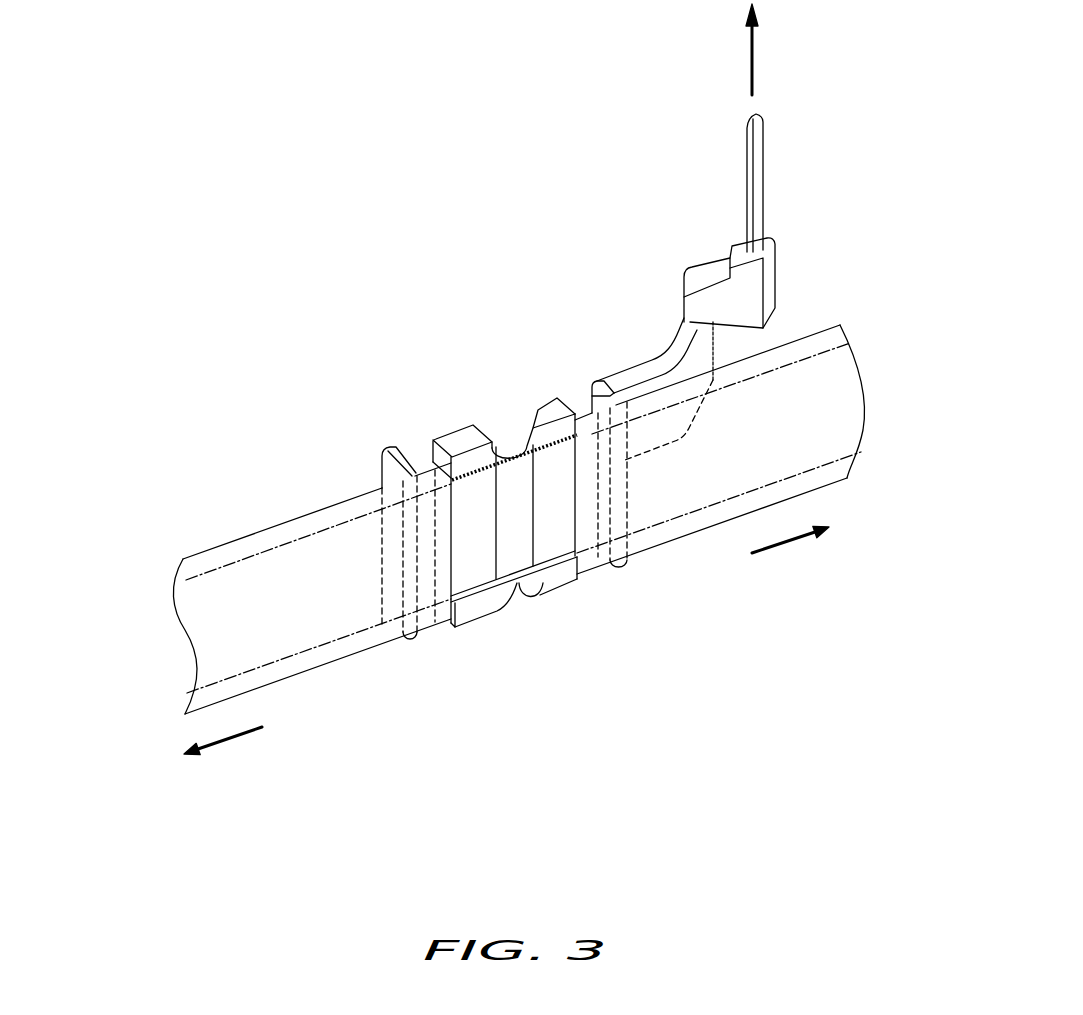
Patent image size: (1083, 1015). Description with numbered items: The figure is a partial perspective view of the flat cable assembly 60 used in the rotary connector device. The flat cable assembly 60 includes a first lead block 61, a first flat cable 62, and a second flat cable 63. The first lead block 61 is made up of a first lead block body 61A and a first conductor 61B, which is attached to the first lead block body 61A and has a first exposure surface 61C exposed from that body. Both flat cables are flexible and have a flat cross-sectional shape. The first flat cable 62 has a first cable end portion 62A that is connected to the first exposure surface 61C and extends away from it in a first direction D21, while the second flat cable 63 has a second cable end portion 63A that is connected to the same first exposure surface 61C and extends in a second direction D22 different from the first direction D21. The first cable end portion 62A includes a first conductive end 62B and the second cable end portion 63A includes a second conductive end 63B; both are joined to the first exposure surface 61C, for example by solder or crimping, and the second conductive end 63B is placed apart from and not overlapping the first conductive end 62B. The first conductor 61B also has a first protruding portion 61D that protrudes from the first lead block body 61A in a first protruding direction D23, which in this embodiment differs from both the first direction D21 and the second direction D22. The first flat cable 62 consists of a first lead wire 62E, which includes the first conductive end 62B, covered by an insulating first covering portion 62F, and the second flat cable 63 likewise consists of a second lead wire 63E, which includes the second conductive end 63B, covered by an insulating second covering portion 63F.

The flat cable assembly 60 is at (526, 448).
The first lead block 61 is at (580, 398).
The first lead block body 61A is at (465, 440).
The first conductor 61B is at (531, 596).
The first exposure surface 61C is at (510, 538).
The first protruding portion 61D is at (750, 175).
The first flat cable 62 is at (304, 602).
The first cable end portion 62A is at (450, 639).
The first conductive end 62B is at (385, 448).
The first lead wire 62E is at (240, 557).
The first covering portion 62F is at (289, 540).
The second flat cable 63 is at (734, 453).
The second cable end portion 63A is at (599, 582).
The second conductive end 63B is at (553, 462).
The second lead wire 63E is at (775, 385).
The second covering portion 63F is at (843, 470).
The first direction D21 is at (217, 745).
The second direction D22 is at (781, 545).
The first protruding direction D23 is at (757, 47).